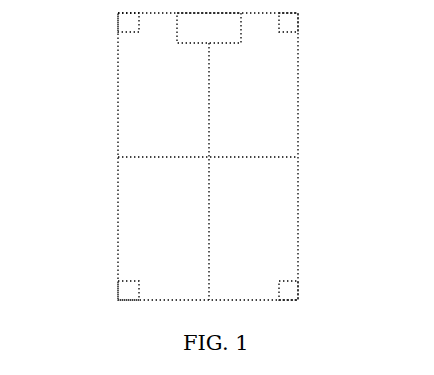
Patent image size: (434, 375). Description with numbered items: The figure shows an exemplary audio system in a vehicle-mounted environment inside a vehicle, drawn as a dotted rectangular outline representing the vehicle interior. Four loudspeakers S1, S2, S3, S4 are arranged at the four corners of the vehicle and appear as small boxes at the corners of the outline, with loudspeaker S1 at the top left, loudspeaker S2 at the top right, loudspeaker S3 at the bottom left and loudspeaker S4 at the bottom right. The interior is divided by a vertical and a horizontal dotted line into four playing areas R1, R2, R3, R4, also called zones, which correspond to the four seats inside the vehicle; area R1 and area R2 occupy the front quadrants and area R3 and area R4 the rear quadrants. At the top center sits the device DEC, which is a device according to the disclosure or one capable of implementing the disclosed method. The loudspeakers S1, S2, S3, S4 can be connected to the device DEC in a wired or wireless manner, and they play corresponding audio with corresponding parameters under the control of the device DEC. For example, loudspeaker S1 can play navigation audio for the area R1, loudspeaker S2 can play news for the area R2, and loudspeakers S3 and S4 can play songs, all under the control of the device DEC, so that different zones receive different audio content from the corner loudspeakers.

The device DEC is at (209, 28).
The loudspeaker S1 is at (124, 21).
The loudspeaker S2 is at (287, 22).
The loudspeaker S3 is at (120, 292).
The loudspeaker S4 is at (285, 292).
The playing area R1 is at (163, 100).
The playing area R2 is at (253, 100).
The playing area R3 is at (163, 228).
The playing area R4 is at (253, 228).